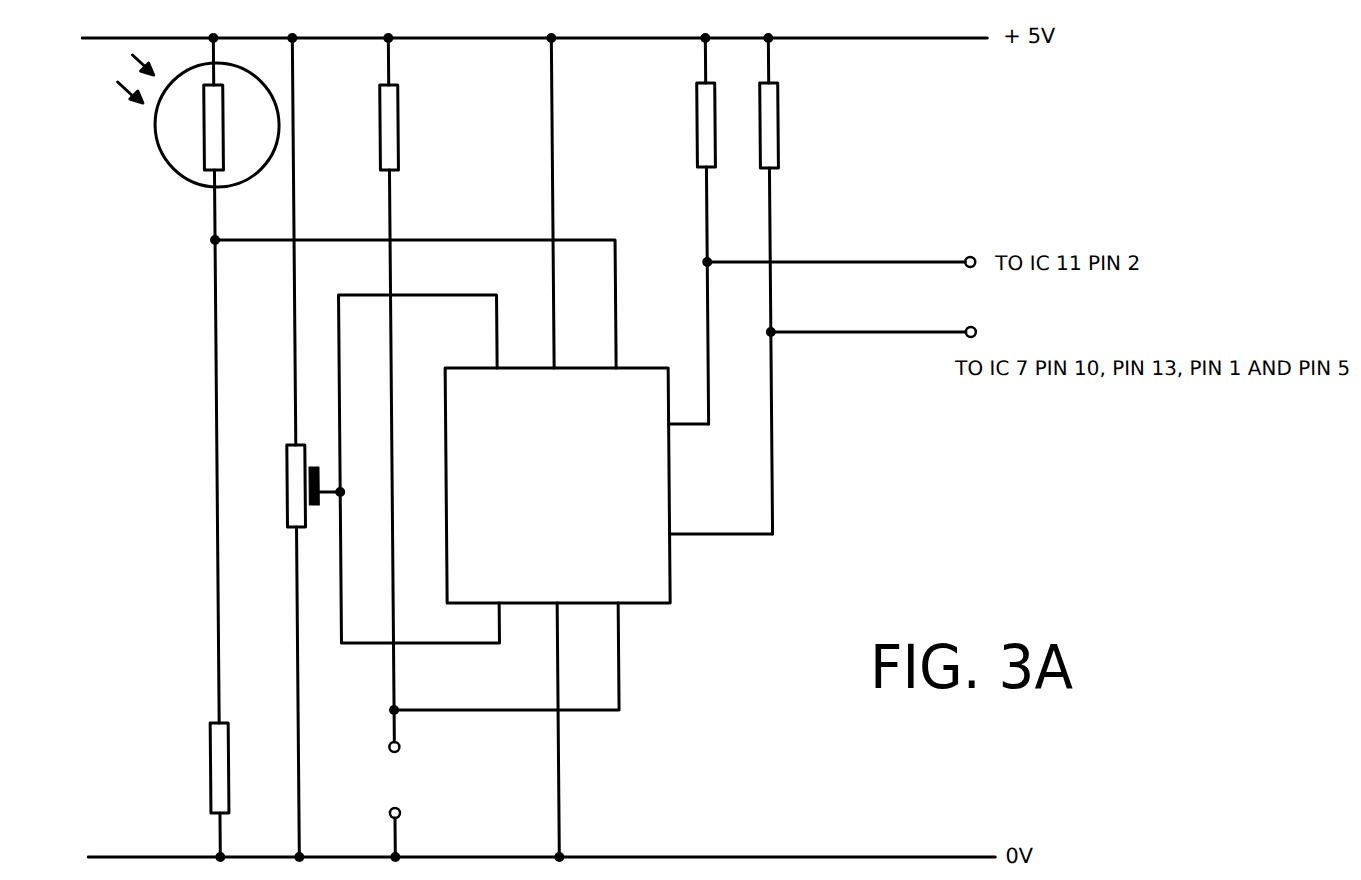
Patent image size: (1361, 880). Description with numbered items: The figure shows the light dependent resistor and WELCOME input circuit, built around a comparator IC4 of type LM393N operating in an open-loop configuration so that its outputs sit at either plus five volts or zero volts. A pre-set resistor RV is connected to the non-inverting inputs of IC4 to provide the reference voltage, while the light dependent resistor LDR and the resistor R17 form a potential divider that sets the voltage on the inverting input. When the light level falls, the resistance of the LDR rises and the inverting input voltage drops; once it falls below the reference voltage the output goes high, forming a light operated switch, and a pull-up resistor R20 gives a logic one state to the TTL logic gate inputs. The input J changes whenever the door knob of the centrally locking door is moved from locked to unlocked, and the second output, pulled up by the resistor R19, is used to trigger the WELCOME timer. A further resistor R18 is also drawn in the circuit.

The light dependent resistor LDR is at (190, 139).
The resistor R17 is at (195, 548).
The resistor R18 is at (368, 390).
The pull-up resistor R19 is at (685, 231).
The pull-up resistor R20 is at (796, 286).
The pre-set resistor RV is at (289, 447).
The comparator IC4 is at (494, 447).
The input J is at (393, 799).